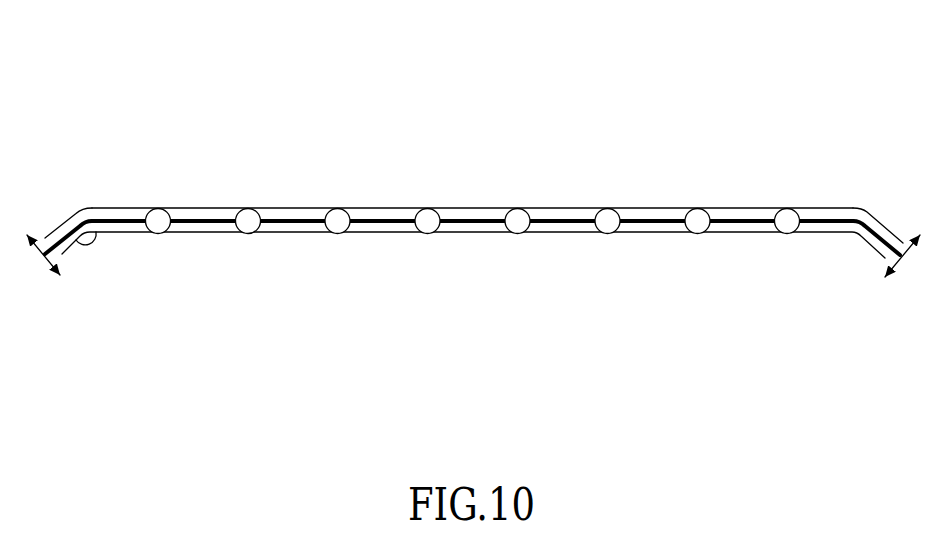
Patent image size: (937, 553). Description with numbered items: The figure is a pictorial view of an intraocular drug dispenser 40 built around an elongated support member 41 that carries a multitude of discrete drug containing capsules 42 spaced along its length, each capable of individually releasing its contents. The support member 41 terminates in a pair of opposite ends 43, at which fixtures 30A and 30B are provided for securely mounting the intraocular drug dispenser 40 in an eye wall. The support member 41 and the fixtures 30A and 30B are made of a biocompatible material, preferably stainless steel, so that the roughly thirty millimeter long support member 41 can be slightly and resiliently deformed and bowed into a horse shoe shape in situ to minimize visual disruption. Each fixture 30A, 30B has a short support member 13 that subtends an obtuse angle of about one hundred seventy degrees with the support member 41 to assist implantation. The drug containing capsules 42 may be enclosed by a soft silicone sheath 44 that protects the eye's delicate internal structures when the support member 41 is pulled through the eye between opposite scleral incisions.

The intraocular drug dispenser 40 is at (683, 75).
The elongated support member 41 is at (737, 223).
The drug containing capsules 42 is at (425, 222).
The opposite ends 43 is at (95, 238).
The soft silicone sheath 44 is at (562, 235).
The fixture 30A is at (62, 220).
The fixture 30B is at (883, 218).
The support member 13 is at (65, 252).